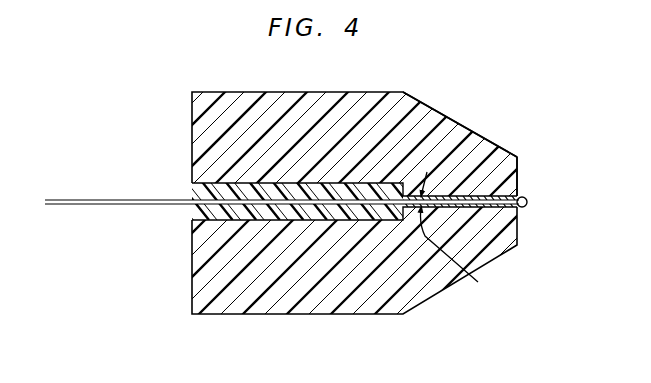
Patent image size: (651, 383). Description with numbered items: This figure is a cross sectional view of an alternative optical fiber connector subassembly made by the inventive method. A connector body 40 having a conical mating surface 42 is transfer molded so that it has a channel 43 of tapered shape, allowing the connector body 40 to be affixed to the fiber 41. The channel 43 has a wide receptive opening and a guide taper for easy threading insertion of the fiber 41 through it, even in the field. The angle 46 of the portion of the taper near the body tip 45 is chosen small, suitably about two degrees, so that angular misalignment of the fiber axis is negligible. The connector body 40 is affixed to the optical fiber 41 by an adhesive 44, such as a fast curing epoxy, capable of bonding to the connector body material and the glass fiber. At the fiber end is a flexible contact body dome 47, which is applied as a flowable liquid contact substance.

The connector body 40 is at (279, 92).
The optical fiber 41 is at (120, 199).
The conical mating surface 42 is at (456, 122).
The channel 43 is at (333, 184).
The adhesive 44 is at (194, 214).
The body tip 45 is at (518, 162).
The angle 46 is at (462, 237).
The flexible contact body dome 47 is at (526, 206).